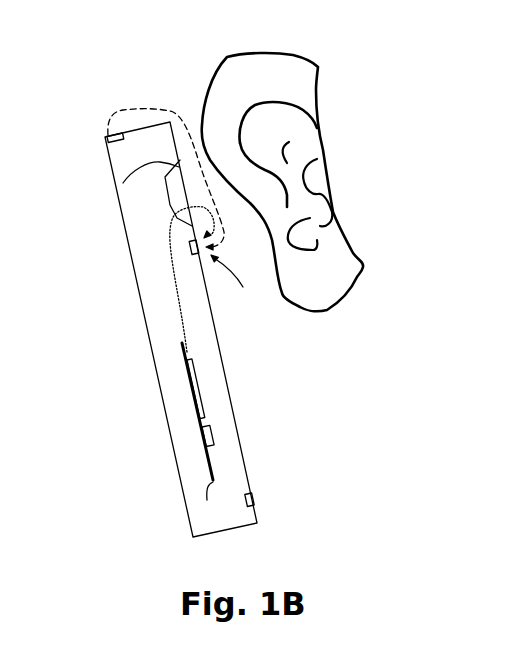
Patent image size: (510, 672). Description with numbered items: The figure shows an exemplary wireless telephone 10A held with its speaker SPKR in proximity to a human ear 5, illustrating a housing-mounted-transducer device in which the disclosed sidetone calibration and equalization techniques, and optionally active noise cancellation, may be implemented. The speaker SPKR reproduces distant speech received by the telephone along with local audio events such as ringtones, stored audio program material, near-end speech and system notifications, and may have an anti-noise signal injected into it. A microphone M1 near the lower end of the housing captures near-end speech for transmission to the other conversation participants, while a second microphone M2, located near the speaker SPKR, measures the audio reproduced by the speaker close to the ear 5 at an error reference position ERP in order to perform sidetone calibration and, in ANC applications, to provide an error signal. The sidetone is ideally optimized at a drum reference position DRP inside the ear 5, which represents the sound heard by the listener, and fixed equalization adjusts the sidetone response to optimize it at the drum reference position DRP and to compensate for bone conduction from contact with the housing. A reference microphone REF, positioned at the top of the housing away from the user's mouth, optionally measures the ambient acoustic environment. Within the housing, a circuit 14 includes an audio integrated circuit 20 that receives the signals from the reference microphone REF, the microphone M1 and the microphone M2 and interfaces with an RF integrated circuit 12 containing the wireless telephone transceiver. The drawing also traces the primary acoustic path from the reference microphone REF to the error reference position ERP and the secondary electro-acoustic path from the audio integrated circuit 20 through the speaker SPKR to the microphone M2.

The human ear 5 is at (277, 53).
The drum reference position DRP is at (313, 192).
The wireless telephone 10A is at (177, 465).
The reference microphone REF is at (110, 143).
The speaker SPKR is at (123, 183).
The second microphone M2 is at (188, 251).
The error reference position ERP is at (239, 287).
The audio integrated circuit 20 is at (187, 373).
The RF integrated circuit 12 is at (214, 431).
The circuit 14 is at (215, 502).
The microphone M1 is at (254, 497).